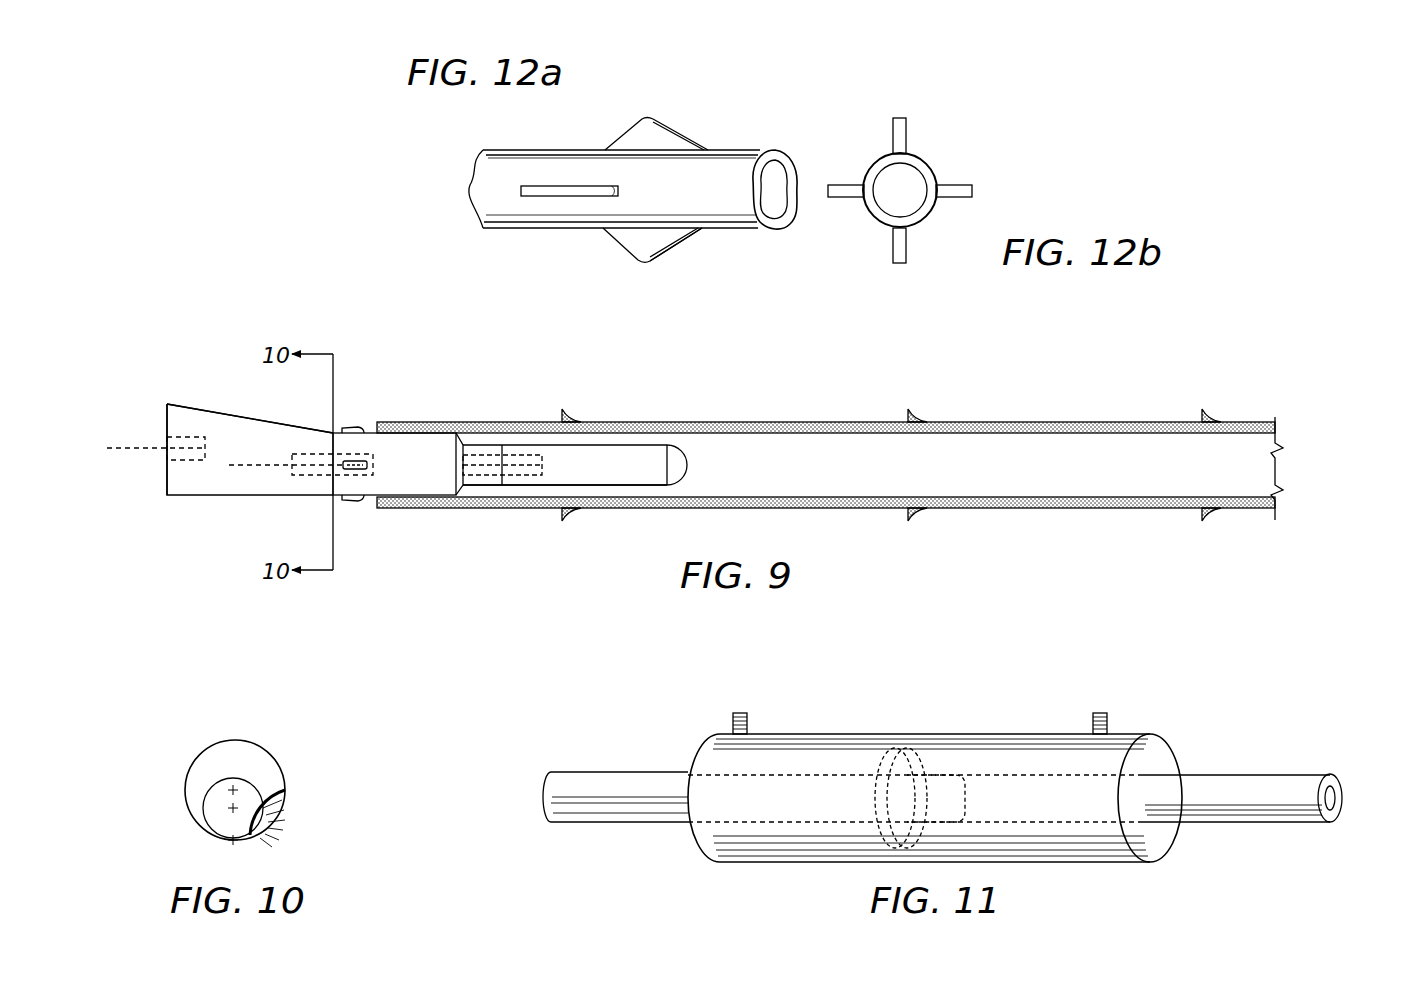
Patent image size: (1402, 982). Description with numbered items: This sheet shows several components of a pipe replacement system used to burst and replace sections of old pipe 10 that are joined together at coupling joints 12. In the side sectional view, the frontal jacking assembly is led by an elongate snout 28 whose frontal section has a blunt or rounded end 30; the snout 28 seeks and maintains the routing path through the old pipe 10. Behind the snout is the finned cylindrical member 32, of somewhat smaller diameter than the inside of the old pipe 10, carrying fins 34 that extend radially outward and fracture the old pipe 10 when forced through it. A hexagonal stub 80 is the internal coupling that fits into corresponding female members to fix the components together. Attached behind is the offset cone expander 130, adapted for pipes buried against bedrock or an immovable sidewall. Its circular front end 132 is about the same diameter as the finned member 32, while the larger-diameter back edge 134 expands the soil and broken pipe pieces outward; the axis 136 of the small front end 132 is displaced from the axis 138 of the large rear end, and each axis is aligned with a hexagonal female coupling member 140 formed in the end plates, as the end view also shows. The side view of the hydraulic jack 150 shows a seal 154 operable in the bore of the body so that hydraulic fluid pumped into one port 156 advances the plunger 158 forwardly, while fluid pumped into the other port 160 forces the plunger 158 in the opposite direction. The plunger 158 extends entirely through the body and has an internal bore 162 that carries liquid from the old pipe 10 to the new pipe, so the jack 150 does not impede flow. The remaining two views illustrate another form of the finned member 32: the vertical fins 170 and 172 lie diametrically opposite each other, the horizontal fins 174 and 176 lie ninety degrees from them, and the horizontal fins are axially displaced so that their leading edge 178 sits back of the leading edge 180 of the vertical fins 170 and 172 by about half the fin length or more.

In FIG. 9, the old pipe 10 is at (770, 422).
In FIG. 9, the coupling joints 12 is at (918, 415).
In FIG. 9, the snout 28 is at (624, 492).
In FIG. 9, the blunt end 30 is at (684, 452).
In FIG. 12a, the finned member 32 is at (510, 205).
In FIG. 12b, the finned member 32 is at (900, 190).
In FIG. 9, the finned member 32 is at (398, 464).
In FIG. 9, the fins 34 is at (348, 428).
In FIG. 9, the hexagonal stub 80 is at (548, 458).
In FIG. 9, the offset cone expander 130 is at (208, 395).
In FIG. 9, the circular front end 132 is at (333, 433).
In FIG. 10, the circular front end 132 is at (205, 806).
In FIG. 9, the back edge 134 is at (167, 425).
In FIG. 10, the back edge 134 is at (196, 756).
In FIG. 9, the axis of front end 136 is at (253, 467).
In FIG. 9, the axis of rear end 138 is at (137, 453).
In FIG. 9, the female coupling members 140 is at (190, 462).
In FIG. 11, the hydraulic jack 150 is at (1168, 722).
In FIG. 11, the seal 154 is at (930, 756).
In FIG. 11, the port 156 is at (738, 712).
In FIG. 11, the plunger 158 is at (1237, 776).
In FIG. 11, the port 160 is at (1098, 712).
In FIG. 11, the internal bore 162 is at (1335, 800).
In FIG. 12a, the vertical fin 170 is at (650, 133).
In FIG. 12b, the vertical fin 170 is at (906, 135).
In FIG. 12a, the vertical fin 172 is at (640, 245).
In FIG. 12b, the vertical fin 172 is at (906, 246).
In FIG. 12a, the horizontal fin 174 is at (590, 186).
In FIG. 12b, the horizontal fin 174 is at (850, 185).
In FIG. 12b, the horizontal fin 176 is at (957, 185).
In FIG. 12a, the leading edge of horizontal fins 178 is at (618, 192).
In FIG. 12a, the leading edge of vertical fins 180 is at (690, 244).